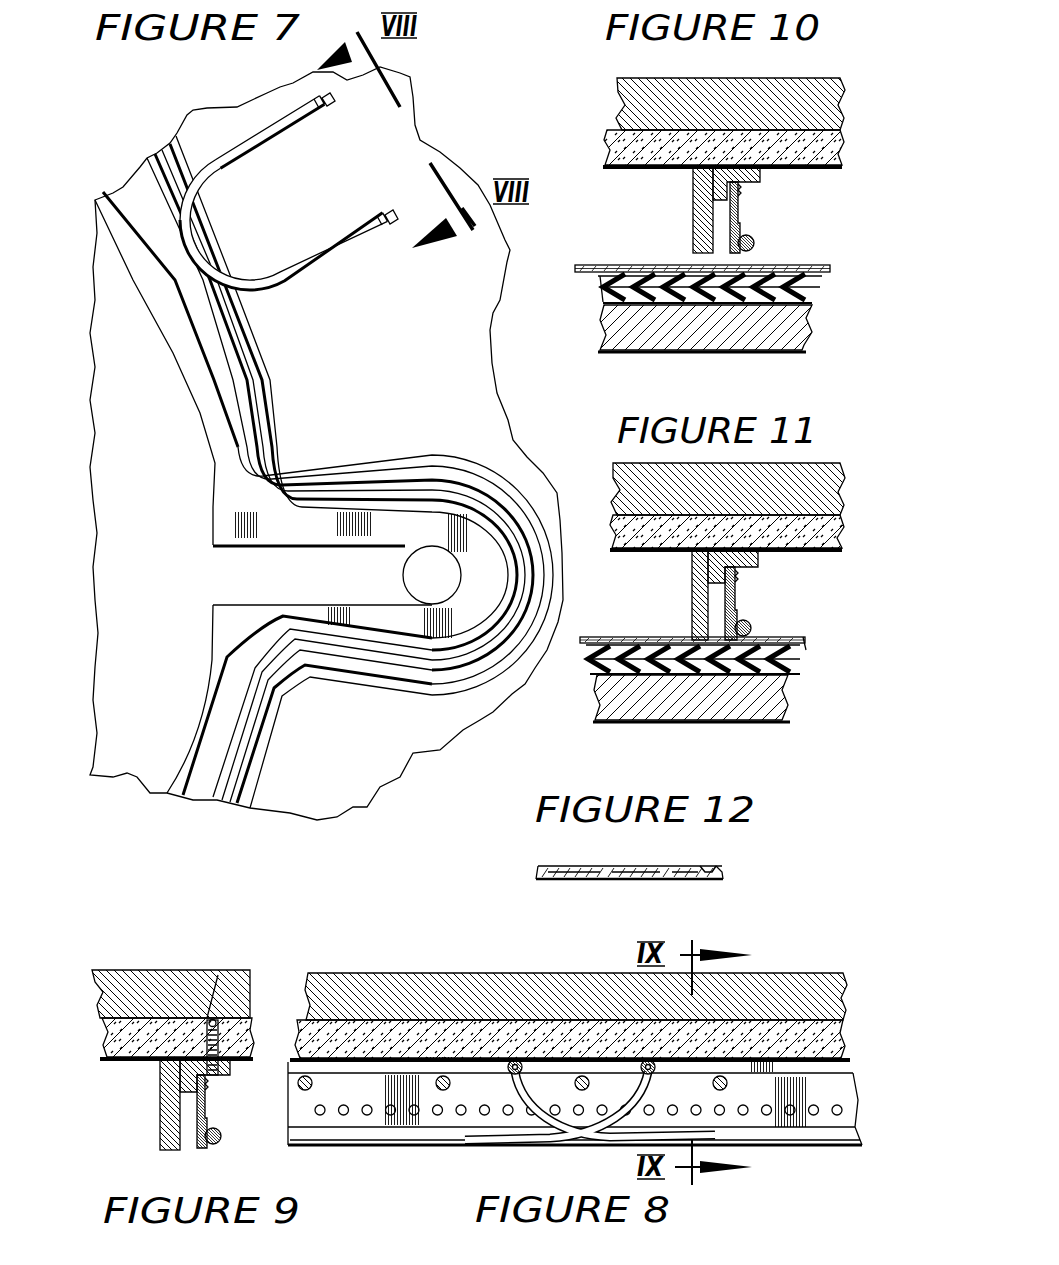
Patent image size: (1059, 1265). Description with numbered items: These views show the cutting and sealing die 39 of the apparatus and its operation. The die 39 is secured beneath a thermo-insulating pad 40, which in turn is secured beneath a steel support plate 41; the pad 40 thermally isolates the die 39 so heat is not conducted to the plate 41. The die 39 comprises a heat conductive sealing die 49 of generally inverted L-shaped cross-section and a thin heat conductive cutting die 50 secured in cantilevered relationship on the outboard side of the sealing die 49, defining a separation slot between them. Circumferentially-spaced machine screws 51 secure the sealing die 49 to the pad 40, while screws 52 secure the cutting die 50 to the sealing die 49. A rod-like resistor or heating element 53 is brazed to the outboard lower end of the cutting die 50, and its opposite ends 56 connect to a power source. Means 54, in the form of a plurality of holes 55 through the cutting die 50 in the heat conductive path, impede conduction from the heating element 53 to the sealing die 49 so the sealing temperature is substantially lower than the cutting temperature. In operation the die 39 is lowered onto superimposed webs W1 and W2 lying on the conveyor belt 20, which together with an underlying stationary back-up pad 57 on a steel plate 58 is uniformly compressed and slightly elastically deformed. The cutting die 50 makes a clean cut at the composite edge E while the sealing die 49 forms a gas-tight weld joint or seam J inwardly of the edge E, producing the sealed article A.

In FIG. 7, the die 39 is at (407, 705).
In FIG. 10, the die 39 is at (670, 196).
In FIG. 11, the die 39 is at (665, 578).
In FIG. 9, the die 39 is at (145, 1123).
In FIG. 10, the thermo-insulating pad 40 is at (627, 145).
In FIG. 11, the thermo-insulating pad 40 is at (633, 532).
In FIG. 9, the thermo-insulating pad 40 is at (237, 1043).
In FIG. 8, the thermo-insulating pad 40 is at (465, 1030).
In FIG. 10, the steel support plate 41 is at (630, 95).
In FIG. 11, the steel support plate 41 is at (627, 483).
In FIG. 9, the steel support plate 41 is at (157, 973).
In FIG. 8, the steel support plate 41 is at (402, 982).
In FIG. 7, the sealing die 49 is at (190, 516).
In FIG. 10, the sealing die 49 is at (679, 234).
In FIG. 11, the sealing die 49 is at (677, 607).
In FIG. 9, the sealing die 49 is at (150, 1097).
In FIG. 10, the cutting die 50 is at (757, 204).
In FIG. 11, the cutting die 50 is at (759, 581).
In FIG. 9, the cutting die 50 is at (195, 1156).
In FIG. 9, the machine screws 51 is at (214, 1017).
In FIG. 9, the screws 52 is at (205, 1088).
In FIG. 8, the screws 52 is at (440, 1088).
In FIG. 7, the heating element 53 is at (251, 277).
In FIG. 10, the heating element 53 is at (778, 234).
In FIG. 11, the heating element 53 is at (775, 617).
In FIG. 9, the heating element 53 is at (214, 1161).
In FIG. 8, the heating element 53 is at (612, 1149).
In FIG. 7, the means for impeding heat conduction 54 is at (341, 486).
In FIG. 9, the means for impeding heat conduction 54 is at (233, 1140).
In FIG. 9, the holes 55 is at (201, 1107).
In FIG. 8, the holes 55 is at (470, 1115).
In FIG. 7, the opposite ends of heating element 56 is at (373, 210).
In FIG. 10, the back-up pad 57 is at (807, 306).
In FIG. 11, the back-up pad 57 is at (795, 668).
In FIG. 10, the steel plate 58 is at (637, 343).
In FIG. 11, the steel plate 58 is at (760, 700).
In FIG. 10, the conveyor belt 20 is at (603, 283).
In FIG. 11, the conveyor belt 20 is at (808, 646).
In FIG. 10, the web W1 is at (803, 267).
In FIG. 11, the web W1 is at (625, 637).
In FIG. 10, the web W2 is at (820, 274).
In FIG. 11, the web W2 is at (607, 642).
In FIG. 12, the article A is at (592, 897).
In FIG. 12, the weld joint or seam J is at (703, 867).
In FIG. 12, the composite edge E is at (725, 877).